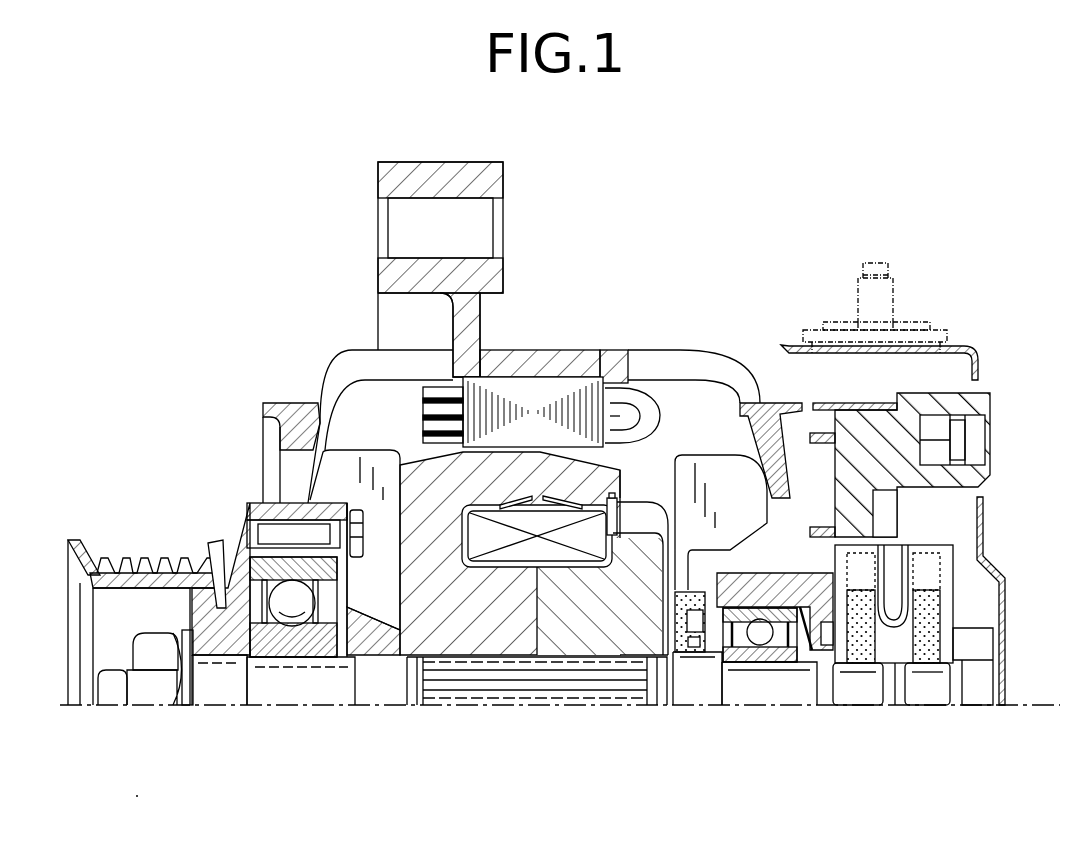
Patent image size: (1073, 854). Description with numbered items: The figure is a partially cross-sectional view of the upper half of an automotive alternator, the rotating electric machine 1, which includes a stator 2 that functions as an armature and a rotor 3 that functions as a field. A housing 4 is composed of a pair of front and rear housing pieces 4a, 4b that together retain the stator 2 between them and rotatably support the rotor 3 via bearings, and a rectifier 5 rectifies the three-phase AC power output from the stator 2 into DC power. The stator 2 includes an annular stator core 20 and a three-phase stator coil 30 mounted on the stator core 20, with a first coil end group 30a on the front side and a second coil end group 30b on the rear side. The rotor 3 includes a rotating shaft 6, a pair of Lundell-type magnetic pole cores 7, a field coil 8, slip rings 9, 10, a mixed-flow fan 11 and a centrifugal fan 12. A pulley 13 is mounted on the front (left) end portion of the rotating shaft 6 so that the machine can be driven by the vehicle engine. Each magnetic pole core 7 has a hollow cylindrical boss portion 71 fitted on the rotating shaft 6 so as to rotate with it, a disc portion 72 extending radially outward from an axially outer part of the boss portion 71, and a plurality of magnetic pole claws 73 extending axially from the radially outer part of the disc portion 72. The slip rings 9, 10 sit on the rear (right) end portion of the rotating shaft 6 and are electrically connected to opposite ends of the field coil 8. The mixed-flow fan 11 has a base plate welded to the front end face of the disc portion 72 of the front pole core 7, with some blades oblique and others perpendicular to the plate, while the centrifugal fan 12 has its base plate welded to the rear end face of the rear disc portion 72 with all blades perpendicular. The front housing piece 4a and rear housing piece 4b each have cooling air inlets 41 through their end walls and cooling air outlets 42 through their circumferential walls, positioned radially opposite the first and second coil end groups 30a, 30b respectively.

The rotating electric machine 1 is at (917, 220).
The stator 2 is at (200, 268).
The stator core 20 is at (513, 388).
The stator coil 30 is at (430, 395).
The first coil end group 30a is at (430, 423).
The second coil end group 30b is at (648, 418).
The rotor 3 is at (553, 723).
The housing 4 is at (643, 263).
The front housing piece 4a is at (545, 357).
The rear housing piece 4b is at (617, 358).
The rectifier 5 is at (1000, 403).
The rotating shaft 6 is at (297, 683).
The magnetic pole core 7 is at (533, 805).
The boss portion 71 is at (480, 607).
The disc portion 72 is at (423, 543).
The magnetic pole claws 73 is at (523, 472).
The field coil 8 is at (588, 537).
The slip ring 9 is at (861, 690).
The slip ring 10 is at (928, 690).
The mixed-flow fan 11 is at (337, 470).
The centrifugal fan 12 is at (728, 493).
The pulley 13 is at (148, 563).
The cooling air inlets 41 is at (288, 485).
The cooling air outlets 42 is at (327, 375).